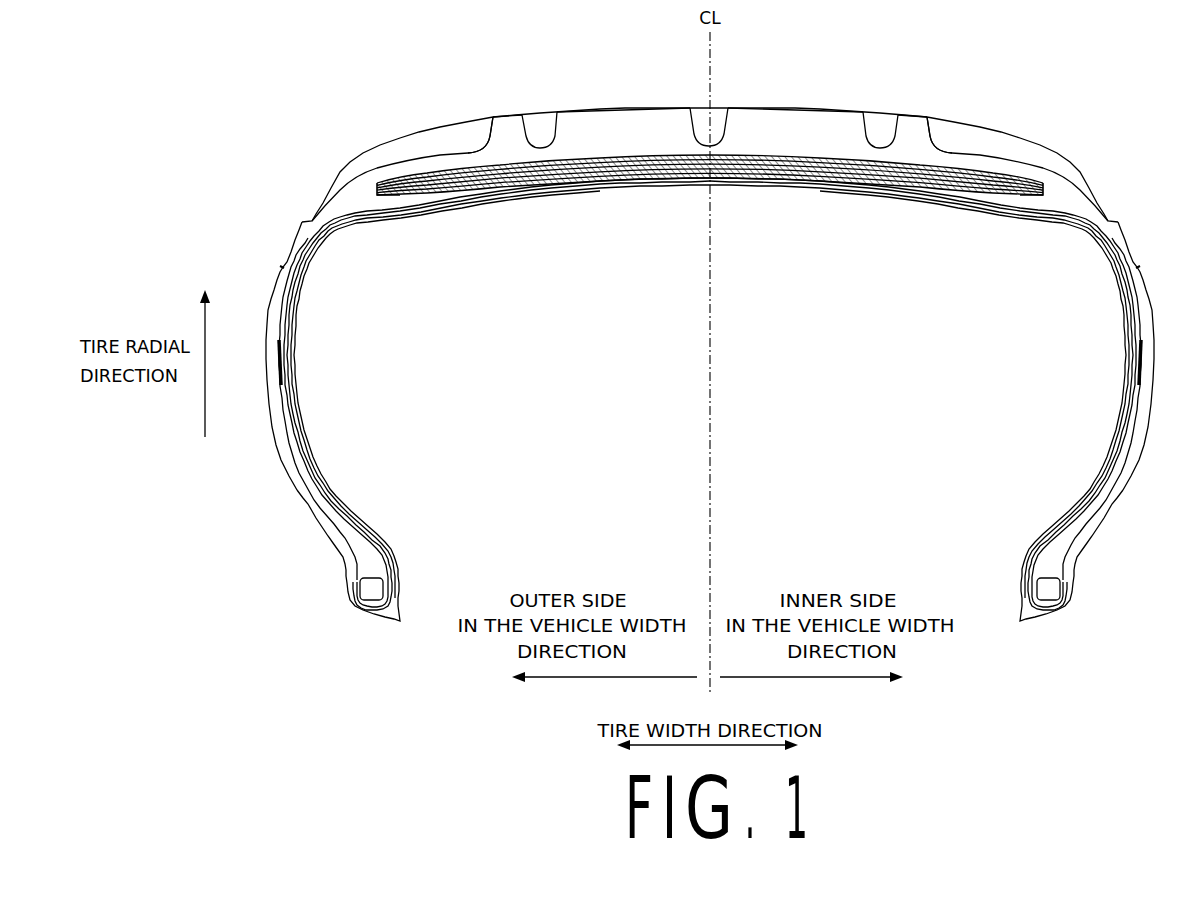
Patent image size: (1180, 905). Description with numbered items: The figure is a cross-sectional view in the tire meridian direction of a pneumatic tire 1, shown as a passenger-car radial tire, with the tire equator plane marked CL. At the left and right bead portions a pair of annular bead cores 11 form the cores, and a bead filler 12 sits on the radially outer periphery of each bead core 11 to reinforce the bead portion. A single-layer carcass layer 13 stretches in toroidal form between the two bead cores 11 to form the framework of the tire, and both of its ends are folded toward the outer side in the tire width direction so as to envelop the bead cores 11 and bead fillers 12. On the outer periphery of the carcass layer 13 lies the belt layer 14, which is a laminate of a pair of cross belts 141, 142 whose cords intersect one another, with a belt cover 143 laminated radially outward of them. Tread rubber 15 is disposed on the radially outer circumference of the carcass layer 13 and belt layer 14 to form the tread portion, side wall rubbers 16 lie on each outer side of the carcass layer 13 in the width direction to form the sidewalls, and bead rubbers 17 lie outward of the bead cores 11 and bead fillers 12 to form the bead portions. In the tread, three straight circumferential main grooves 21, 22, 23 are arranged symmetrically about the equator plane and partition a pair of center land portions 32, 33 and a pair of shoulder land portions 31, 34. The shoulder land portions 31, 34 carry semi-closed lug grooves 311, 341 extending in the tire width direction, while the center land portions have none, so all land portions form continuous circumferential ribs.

The pneumatic tire 1 is at (985, 92).
The bead core 11 is at (372, 603).
The bead filler 12 is at (370, 533).
The carcass layer 13 is at (1053, 224).
The belt layer 14 is at (710, 228).
The cross belt 141 is at (878, 258).
The cross belt 142 is at (948, 188).
The belt cover 143 is at (903, 188).
The tread rubber 15 is at (1063, 187).
The side wall rubber 16 is at (278, 291).
The bead rubber 17 is at (326, 529).
The circumferential main groove 21 is at (542, 122).
The circumferential main groove 22 is at (718, 118).
The circumferential main groove 23 is at (874, 122).
The shoulder land portion 31 is at (502, 113).
The center land portion 32 is at (612, 118).
The center land portion 33 is at (786, 118).
The shoulder land portion 34 is at (909, 118).
The lug groove 311 is at (427, 140).
The lug groove 341 is at (1028, 150).